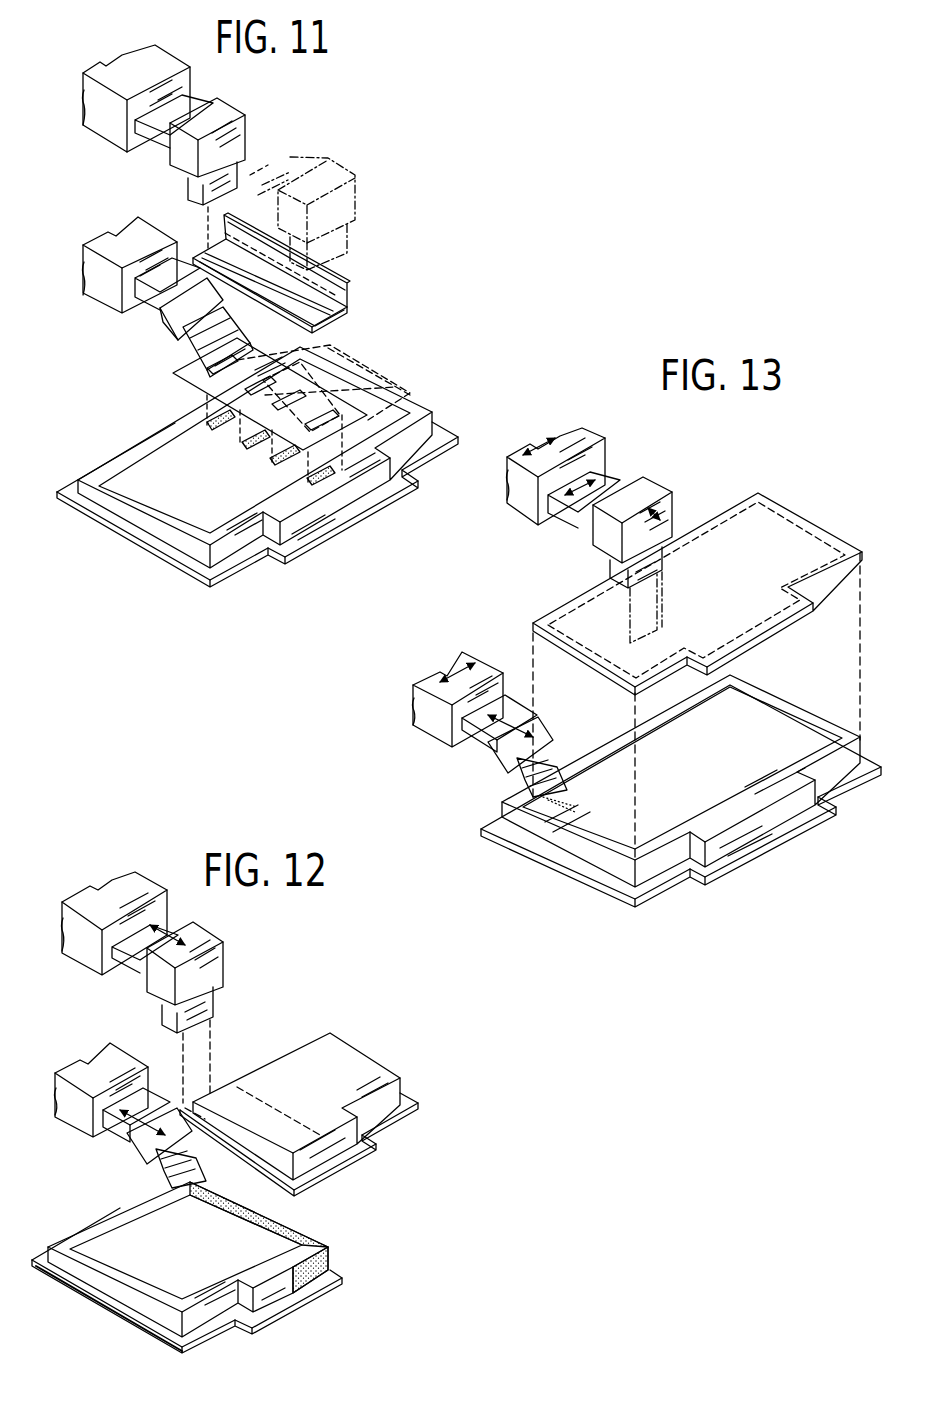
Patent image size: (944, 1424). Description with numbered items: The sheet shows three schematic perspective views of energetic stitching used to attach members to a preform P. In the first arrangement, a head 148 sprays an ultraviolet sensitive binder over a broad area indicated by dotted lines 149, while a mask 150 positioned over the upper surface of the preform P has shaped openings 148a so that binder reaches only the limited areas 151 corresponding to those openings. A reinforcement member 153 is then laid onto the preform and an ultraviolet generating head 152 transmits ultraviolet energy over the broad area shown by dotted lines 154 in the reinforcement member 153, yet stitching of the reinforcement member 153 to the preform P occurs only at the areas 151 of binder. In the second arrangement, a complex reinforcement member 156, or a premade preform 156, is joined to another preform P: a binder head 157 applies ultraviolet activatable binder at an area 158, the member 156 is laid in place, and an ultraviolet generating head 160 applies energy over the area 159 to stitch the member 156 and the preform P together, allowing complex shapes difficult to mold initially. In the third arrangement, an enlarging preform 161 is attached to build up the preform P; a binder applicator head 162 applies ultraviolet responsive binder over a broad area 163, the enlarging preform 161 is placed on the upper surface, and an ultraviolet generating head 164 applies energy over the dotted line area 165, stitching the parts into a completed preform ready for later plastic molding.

In FIG. 11, the head 148 is at (167, 320).
In FIG. 11, the shaped openings 148a is at (267, 380).
In FIG. 11, the dotted lines 149 is at (378, 363).
In FIG. 11, the mask 150 is at (362, 417).
In FIG. 11, the areas 151 is at (283, 467).
In FIG. 11, the ultraviolet generating head 152 is at (245, 148).
In FIG. 11, the reinforcement member 153 is at (347, 297).
In FIG. 11, the dotted lines 154 is at (343, 322).
In FIG. 12, the complex reinforcement member 156 is at (357, 1062).
In FIG. 12, the binder head 157 is at (137, 1152).
In FIG. 12, the area 158 is at (302, 1243).
In FIG. 12, the area 159 is at (290, 1112).
In FIG. 12, the ultraviolet generating head 160 is at (210, 977).
In FIG. 13, the enlarging preform 161 is at (783, 547).
In FIG. 13, the binder applicator head 162 is at (500, 755).
In FIG. 13, the broad area 163 is at (587, 820).
In FIG. 13, the ultraviolet generating head 164 is at (667, 530).
In FIG. 13, the dotted line area 165 is at (787, 513).
In FIG. 11, the preform P is at (290, 528).
In FIG. 13, the preform P is at (667, 863).
In FIG. 12, the preform P is at (200, 1318).